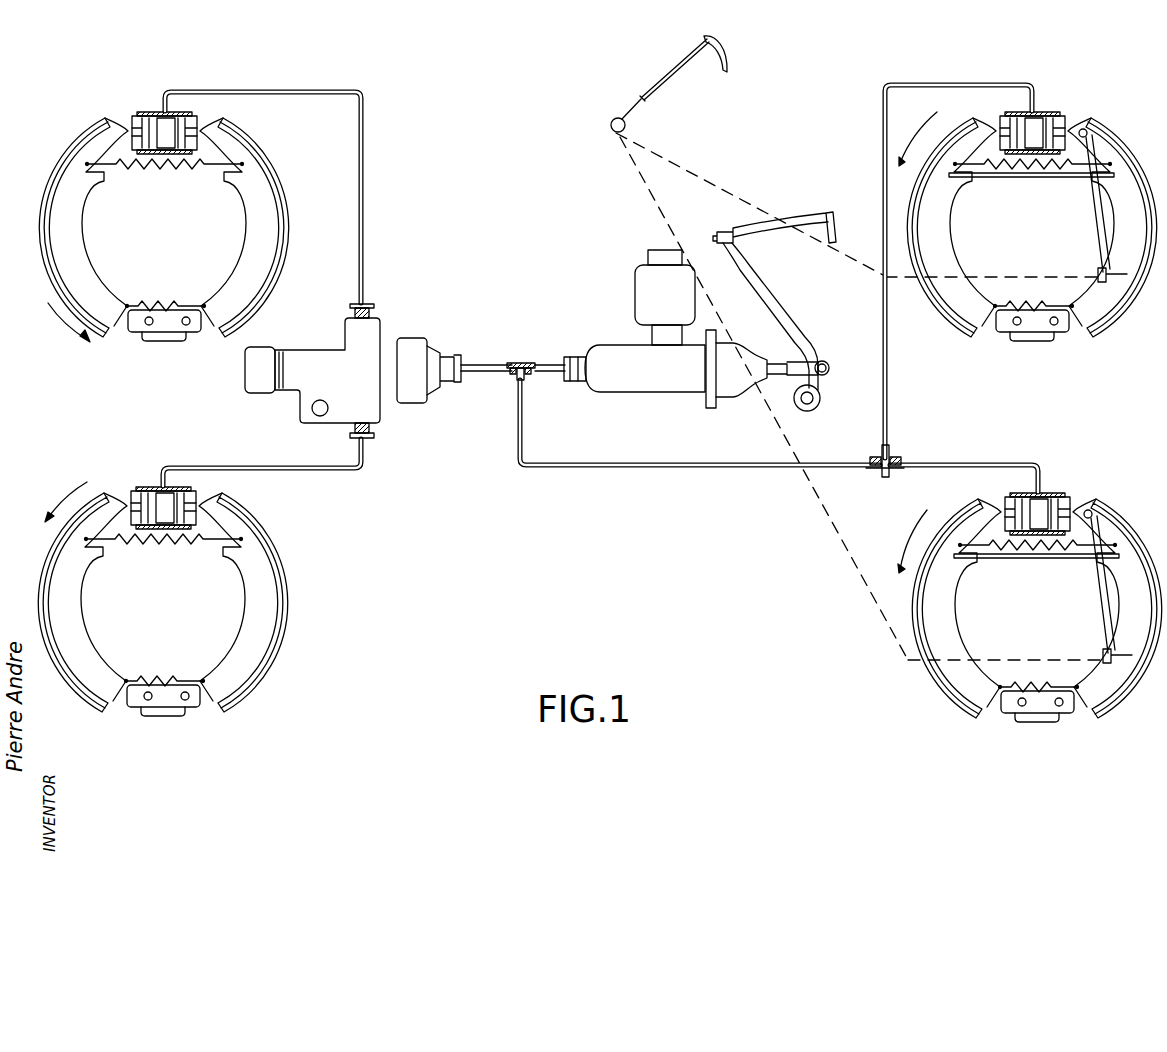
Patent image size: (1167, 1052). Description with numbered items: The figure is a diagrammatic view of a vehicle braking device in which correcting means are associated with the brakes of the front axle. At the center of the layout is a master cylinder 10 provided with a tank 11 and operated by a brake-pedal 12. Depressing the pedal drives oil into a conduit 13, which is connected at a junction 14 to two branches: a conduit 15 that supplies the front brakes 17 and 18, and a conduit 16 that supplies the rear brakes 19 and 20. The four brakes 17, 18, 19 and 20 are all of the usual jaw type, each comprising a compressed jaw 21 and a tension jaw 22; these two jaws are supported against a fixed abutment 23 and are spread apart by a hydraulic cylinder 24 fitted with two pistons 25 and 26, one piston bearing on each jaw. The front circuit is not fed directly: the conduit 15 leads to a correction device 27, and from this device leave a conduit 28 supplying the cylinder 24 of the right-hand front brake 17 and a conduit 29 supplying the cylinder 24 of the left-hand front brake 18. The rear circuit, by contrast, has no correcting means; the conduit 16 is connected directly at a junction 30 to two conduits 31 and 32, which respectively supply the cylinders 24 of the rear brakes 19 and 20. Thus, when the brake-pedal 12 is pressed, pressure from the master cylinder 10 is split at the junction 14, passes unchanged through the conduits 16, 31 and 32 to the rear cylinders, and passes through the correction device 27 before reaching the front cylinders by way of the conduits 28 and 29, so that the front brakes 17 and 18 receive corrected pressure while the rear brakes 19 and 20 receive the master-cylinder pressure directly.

The master cylinder 10 is at (640, 385).
The tank 11 is at (640, 302).
The brake-pedal 12 is at (833, 240).
The conduit 13 is at (548, 362).
The connection 14 is at (520, 360).
The conduit 15 is at (488, 373).
The conduit 16 is at (528, 452).
The front brake 17 is at (188, 235).
The front brake 18 is at (185, 578).
The rear brake 19 is at (1030, 204).
The rear brake 20 is at (1030, 583).
The compressed jaw 21 is at (83, 212).
The tension jaw 22 is at (249, 226).
The fixed abutment 23 is at (164, 354).
The hydraulic cylinder 24 is at (174, 112).
The piston 25 is at (122, 110).
The piston 26 is at (215, 121).
The correction device 27 is at (298, 348).
The conduit 28 is at (365, 217).
The conduit 29 is at (322, 478).
The connection 30 is at (886, 472).
The conduit 31 is at (893, 400).
The conduit 32 is at (992, 465).